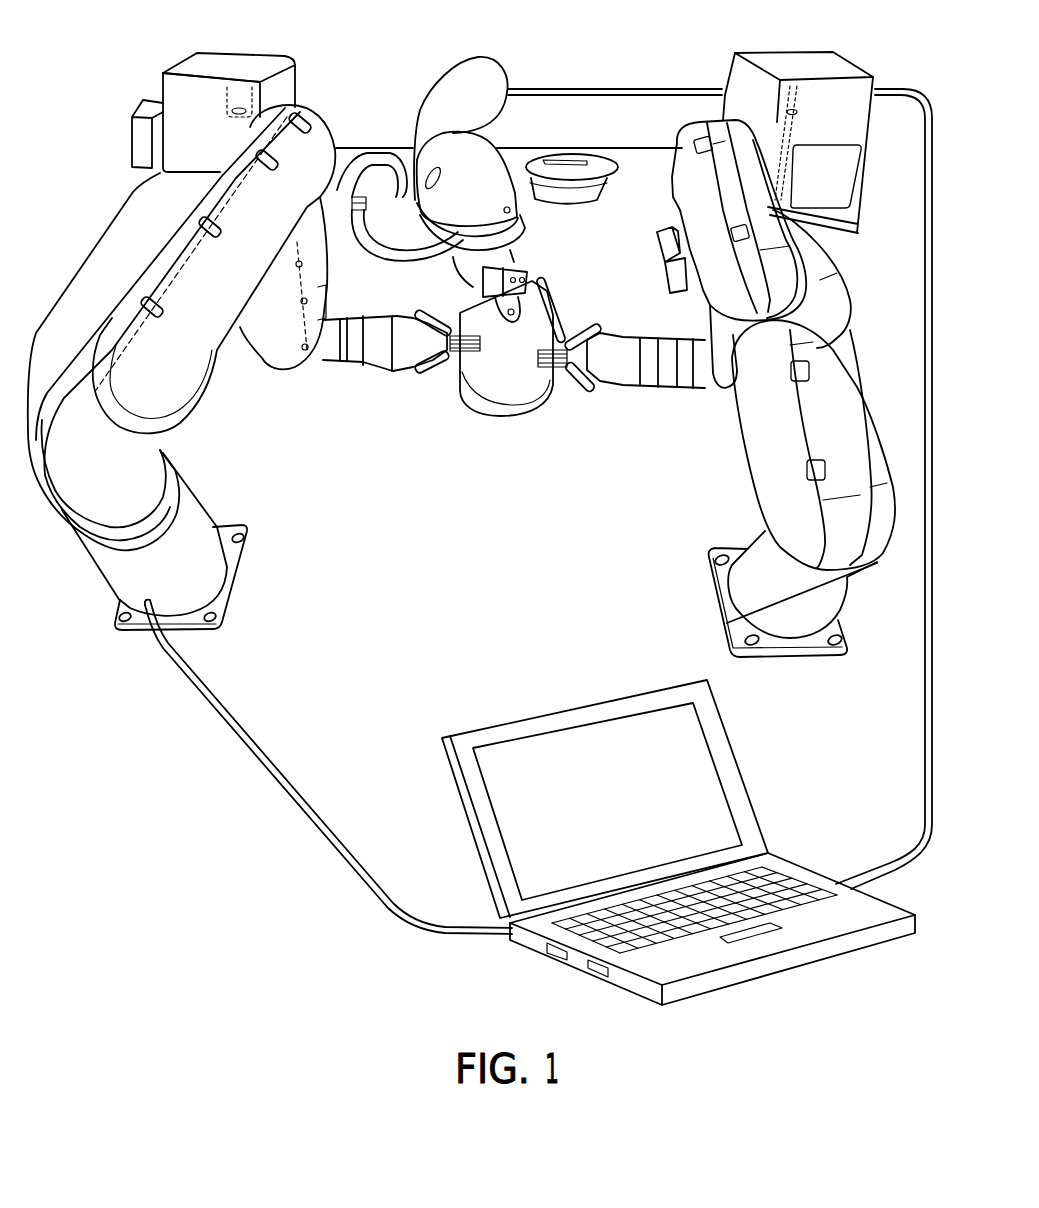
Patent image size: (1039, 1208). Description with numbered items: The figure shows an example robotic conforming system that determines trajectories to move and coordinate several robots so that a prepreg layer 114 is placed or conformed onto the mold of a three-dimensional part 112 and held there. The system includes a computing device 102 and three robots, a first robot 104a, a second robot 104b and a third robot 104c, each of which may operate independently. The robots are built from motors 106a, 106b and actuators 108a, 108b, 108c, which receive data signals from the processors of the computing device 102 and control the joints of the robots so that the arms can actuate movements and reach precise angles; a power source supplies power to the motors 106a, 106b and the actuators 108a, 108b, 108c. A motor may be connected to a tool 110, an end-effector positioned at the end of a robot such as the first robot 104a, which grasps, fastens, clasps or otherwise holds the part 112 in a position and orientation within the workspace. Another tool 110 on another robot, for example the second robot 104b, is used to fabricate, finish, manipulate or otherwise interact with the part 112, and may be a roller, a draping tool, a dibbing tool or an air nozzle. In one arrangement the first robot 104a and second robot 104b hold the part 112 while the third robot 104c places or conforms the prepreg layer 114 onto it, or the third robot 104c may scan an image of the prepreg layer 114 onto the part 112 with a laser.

The computing device 102 is at (507, 942).
The first robot 104a is at (187, 522).
The second robot 104b is at (763, 447).
The third robot 104c is at (413, 150).
The motor 106a is at (158, 454).
The motor 106b is at (837, 575).
The actuator 108a is at (285, 356).
The actuator 108b is at (730, 385).
The actuator 108c is at (436, 101).
The end-effector 110 is at (424, 377).
The part 112 is at (533, 418).
The prepreg layer 114 is at (566, 300).